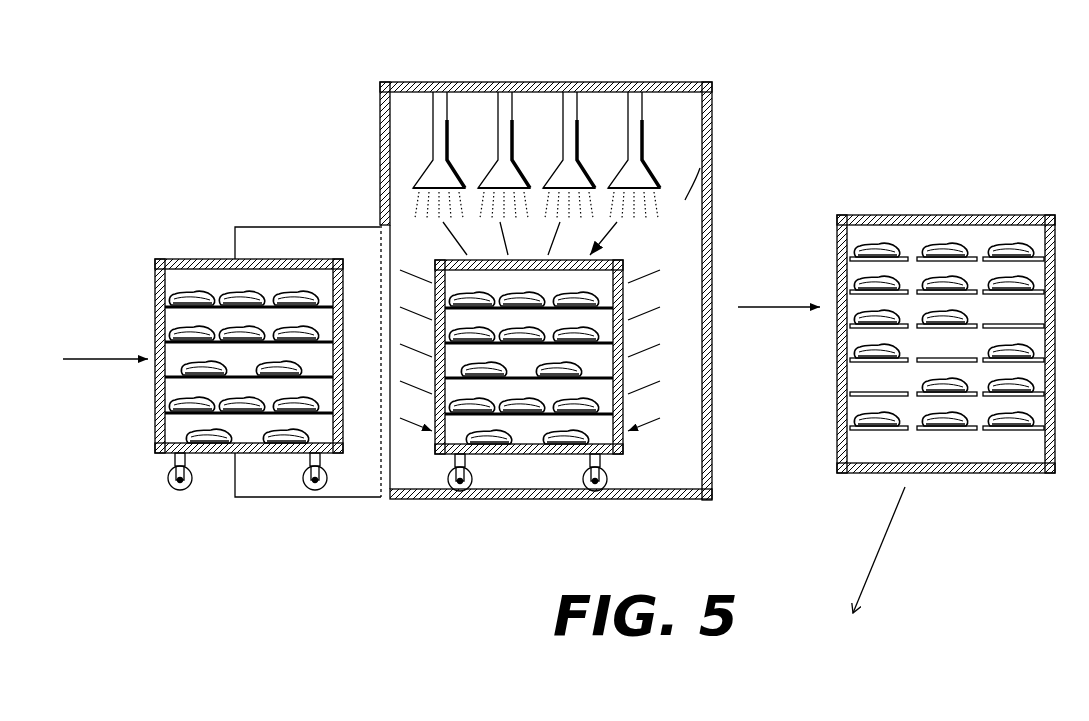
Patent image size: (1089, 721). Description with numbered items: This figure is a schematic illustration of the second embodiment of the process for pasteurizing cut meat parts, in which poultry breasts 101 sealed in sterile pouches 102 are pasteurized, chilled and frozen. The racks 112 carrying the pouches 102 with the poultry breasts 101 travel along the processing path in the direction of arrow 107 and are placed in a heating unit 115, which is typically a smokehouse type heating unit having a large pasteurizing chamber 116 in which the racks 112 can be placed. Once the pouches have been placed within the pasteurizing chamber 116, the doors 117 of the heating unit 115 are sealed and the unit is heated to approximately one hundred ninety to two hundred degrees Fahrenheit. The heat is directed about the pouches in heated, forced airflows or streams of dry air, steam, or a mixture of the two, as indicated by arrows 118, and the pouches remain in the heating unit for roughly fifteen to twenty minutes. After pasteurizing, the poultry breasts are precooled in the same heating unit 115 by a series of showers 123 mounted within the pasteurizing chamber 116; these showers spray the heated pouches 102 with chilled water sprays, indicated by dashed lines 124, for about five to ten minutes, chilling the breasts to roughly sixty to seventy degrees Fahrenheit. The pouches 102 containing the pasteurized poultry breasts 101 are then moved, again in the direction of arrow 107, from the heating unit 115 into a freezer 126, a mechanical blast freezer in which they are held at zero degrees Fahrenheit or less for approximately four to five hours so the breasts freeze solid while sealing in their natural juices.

The poultry breasts 101 is at (198, 287).
The pouches 102 is at (176, 286).
The direction of arrow 107 is at (106, 356).
The racks 112 is at (155, 428).
The heating unit 115 is at (533, 80).
The pasteurizing chamber 116 is at (712, 152).
The doors 117 is at (360, 492).
The arrows 118 is at (557, 230).
The showers 123 is at (637, 175).
The dashed lines 124 is at (613, 187).
The freezer 126 is at (923, 208).